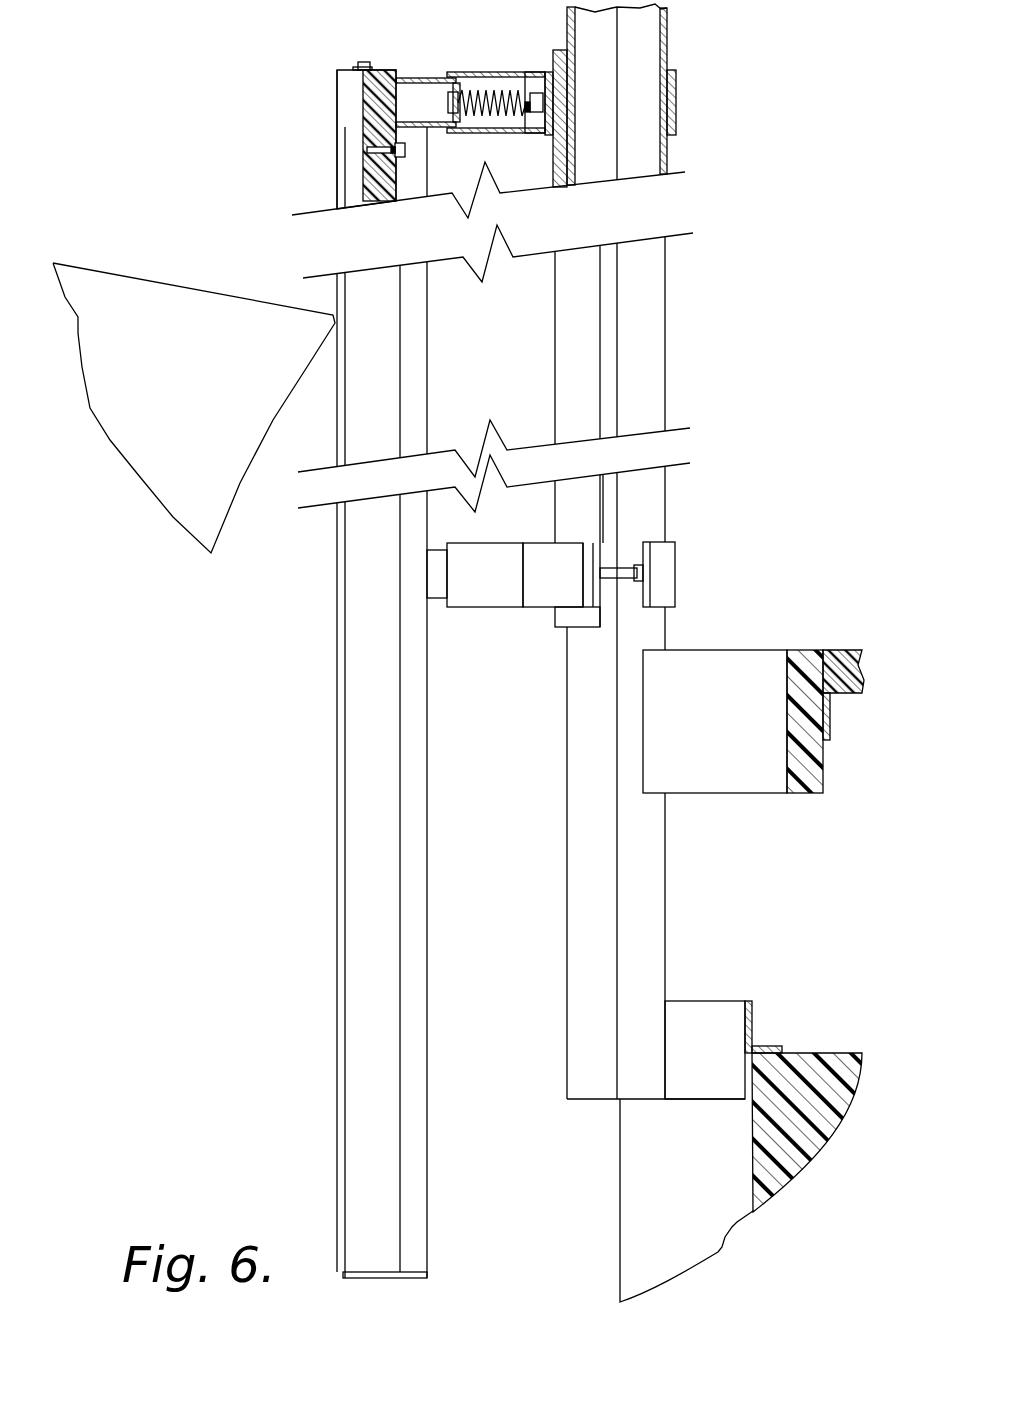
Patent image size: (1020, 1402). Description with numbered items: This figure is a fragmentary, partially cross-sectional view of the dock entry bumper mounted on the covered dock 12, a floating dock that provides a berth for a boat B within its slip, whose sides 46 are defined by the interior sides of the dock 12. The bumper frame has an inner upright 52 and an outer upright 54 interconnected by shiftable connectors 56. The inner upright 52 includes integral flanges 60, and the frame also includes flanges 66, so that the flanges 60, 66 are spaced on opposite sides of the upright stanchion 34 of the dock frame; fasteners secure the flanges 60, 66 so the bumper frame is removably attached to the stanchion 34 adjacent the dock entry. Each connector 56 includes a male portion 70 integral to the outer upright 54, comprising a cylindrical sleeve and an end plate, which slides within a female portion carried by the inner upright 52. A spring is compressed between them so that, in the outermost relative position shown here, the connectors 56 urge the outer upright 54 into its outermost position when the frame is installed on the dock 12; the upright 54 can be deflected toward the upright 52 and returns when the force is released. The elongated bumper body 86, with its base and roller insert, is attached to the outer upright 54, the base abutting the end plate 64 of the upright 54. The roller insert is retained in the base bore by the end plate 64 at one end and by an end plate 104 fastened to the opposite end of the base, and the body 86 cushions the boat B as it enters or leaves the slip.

The covered dock 12 is at (743, 662).
The upright stanchion 34 is at (655, 48).
The slip side 46 is at (316, 831).
The inner upright 52 is at (580, 378).
The outer upright 54 is at (412, 357).
The shiftable connector 56 is at (505, 72).
The flange 60 is at (565, 178).
The end plate 64 is at (388, 1276).
The flange 66 is at (672, 118).
The male portion 70 is at (436, 78).
The bumper body 86 is at (350, 125).
The end plate 104 is at (360, 62).
The boat B is at (125, 287).